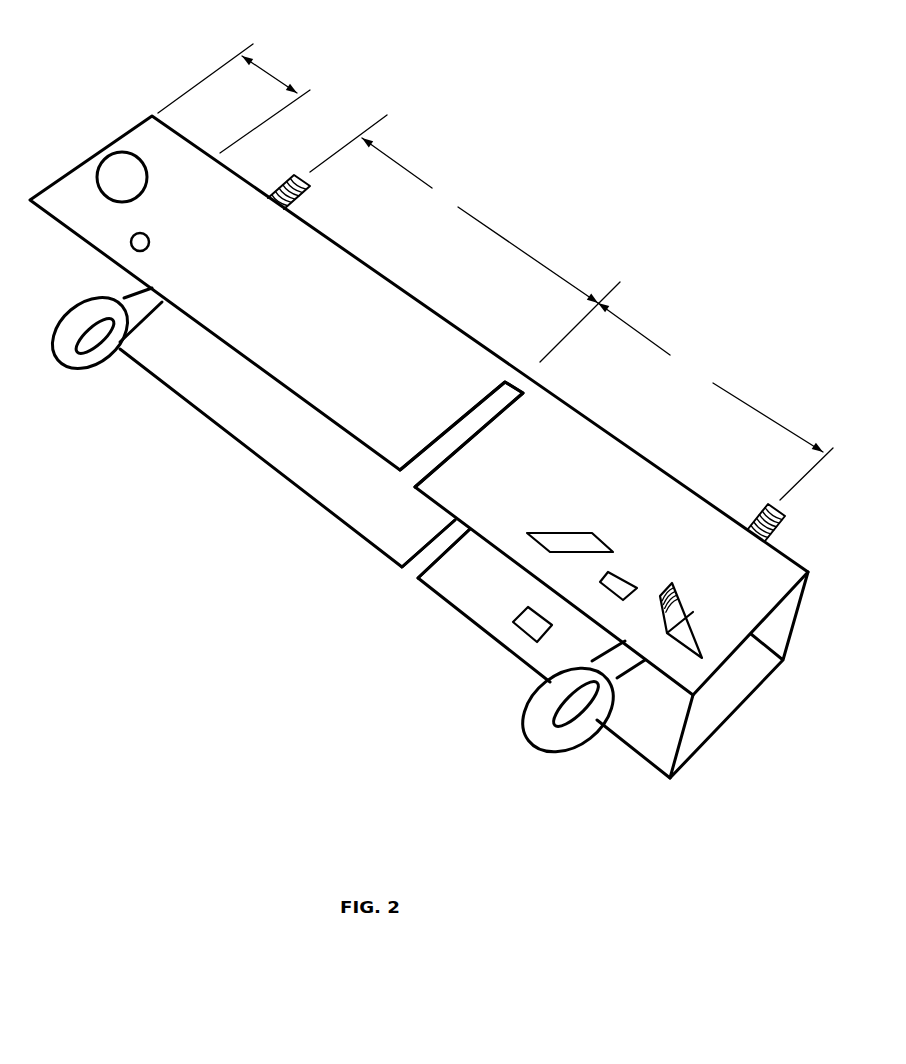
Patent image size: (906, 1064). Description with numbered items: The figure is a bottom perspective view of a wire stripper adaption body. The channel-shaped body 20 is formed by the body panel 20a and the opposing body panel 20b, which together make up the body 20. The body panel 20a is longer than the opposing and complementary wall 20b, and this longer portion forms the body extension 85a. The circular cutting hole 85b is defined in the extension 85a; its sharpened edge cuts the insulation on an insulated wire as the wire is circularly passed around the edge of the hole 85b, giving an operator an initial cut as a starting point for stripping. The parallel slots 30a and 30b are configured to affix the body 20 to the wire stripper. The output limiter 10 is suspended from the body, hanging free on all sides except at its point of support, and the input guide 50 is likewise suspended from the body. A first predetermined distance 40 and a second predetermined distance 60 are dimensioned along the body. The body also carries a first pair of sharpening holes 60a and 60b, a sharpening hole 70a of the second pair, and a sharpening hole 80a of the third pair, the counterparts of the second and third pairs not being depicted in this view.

The output limiter 10 is at (316, 184).
The body 20 is at (419, 447).
The body panel 20a is at (385, 294).
The opposing body panel 20b is at (240, 418).
The parallel slot 30a is at (412, 480).
The parallel slot 30b is at (416, 577).
The first predetermined distance 40 is at (465, 238).
The input guide 50 is at (778, 503).
The second predetermined distance 60 is at (715, 401).
The sharpening hole 60a is at (614, 582).
The sharpening hole 60b is at (522, 619).
The sharpening hole 70a is at (606, 548).
The sharpening hole 80a is at (692, 626).
The body extension 85a is at (234, 98).
The circular cutting hole 85b is at (118, 166).